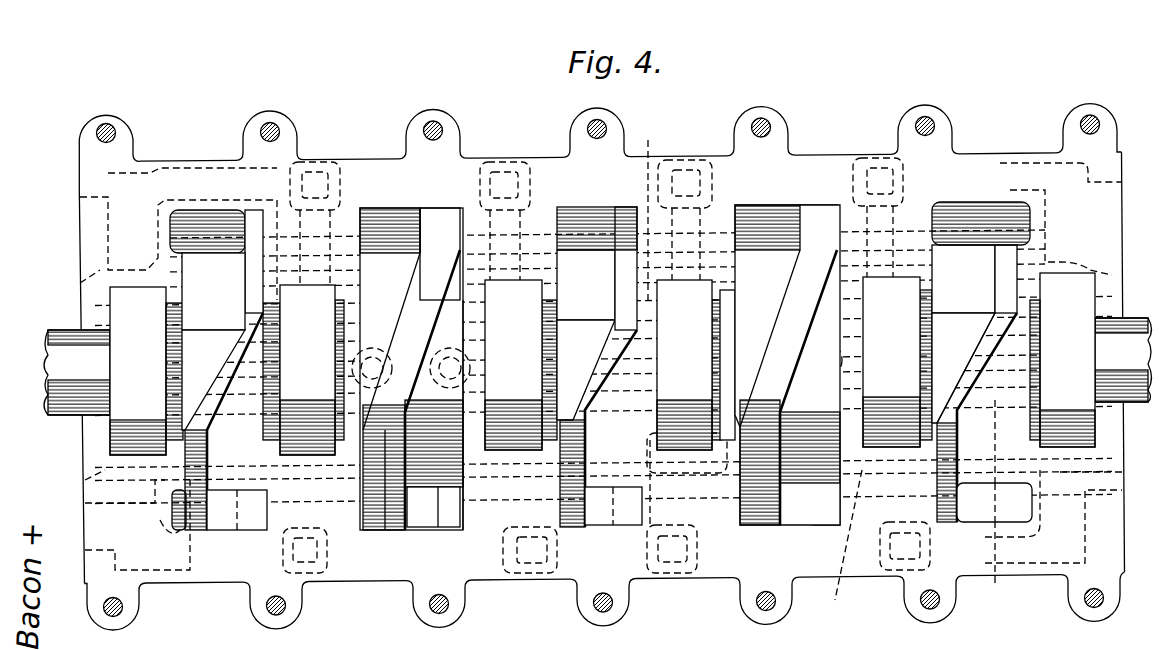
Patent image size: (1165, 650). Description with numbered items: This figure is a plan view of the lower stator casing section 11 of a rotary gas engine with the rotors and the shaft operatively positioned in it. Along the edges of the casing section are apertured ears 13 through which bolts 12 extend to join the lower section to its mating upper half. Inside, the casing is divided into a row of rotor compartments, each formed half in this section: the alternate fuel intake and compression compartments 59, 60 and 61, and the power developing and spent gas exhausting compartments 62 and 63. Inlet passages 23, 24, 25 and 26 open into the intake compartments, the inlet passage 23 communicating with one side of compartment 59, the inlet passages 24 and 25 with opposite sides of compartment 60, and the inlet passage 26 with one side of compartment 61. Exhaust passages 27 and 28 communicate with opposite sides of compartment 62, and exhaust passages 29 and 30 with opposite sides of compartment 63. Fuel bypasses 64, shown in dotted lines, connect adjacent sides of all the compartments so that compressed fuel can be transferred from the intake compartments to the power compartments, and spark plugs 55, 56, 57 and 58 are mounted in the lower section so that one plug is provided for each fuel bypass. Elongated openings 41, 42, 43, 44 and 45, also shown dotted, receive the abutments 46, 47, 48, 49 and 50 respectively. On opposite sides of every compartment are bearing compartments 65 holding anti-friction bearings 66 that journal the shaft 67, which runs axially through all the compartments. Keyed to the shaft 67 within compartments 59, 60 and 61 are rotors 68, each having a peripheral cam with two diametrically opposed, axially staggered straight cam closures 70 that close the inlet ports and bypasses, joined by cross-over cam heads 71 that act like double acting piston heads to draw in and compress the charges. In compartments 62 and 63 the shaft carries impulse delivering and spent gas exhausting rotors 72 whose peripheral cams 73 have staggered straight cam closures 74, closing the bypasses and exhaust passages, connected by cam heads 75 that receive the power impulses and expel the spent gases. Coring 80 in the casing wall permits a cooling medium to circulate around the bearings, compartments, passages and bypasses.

The lower stator casing section 11 is at (601, 351).
The bolts 12 is at (598, 358).
The apertured ears 13 is at (601, 362).
The inlet passage 23 is at (311, 571).
The inlet passage 24 is at (530, 572).
The inlet passage 25 is at (672, 574).
The inlet passage 26 is at (896, 569).
The exhaust passage 27 is at (315, 200).
The exhaust passage 28 is at (505, 202).
The exhaust passage 29 is at (685, 203).
The exhaust passage 30 is at (877, 201).
The elongated opening 41 is at (108, 486).
The elongated opening 42 is at (263, 242).
The elongated opening 43 is at (479, 428).
The elongated opening 44 is at (644, 208).
The elongated opening 45 is at (965, 546).
The abutment 46 is at (137, 525).
The abutment 47 is at (391, 301).
The abutment 48 is at (673, 494).
The abutment 49 is at (734, 306).
The abutment 50 is at (1012, 511).
The spark plug 55 is at (413, 465).
The spark plug 56 is at (432, 390).
The spark plug 57 is at (776, 387).
The spark plug 58 is at (810, 387).
The fuel intake and compression compartment 59 is at (181, 226).
The fuel intake and compression compartment 60 is at (589, 183).
The fuel intake and compression compartment 61 is at (981, 268).
The power developing and spent gas exhausting compartment 62 is at (411, 328).
The power developing and spent gas exhausting compartment 63 is at (787, 321).
The fuel bypasses 64 is at (603, 366).
The bearing compartments 65 is at (626, 374).
The anti-friction bearings 66 is at (602, 364).
The shaft 67 is at (77, 355).
The rotors 68 is at (588, 337).
The cam closures 70 is at (602, 363).
The cam heads 71 is at (607, 421).
The impulse delivering and spent gas exhausting rotors 72 is at (625, 521).
The peripheral cams 73 is at (580, 502).
The cam closures 74 is at (611, 366).
The cam heads 75 is at (597, 339).
The coring 80 is at (601, 206).